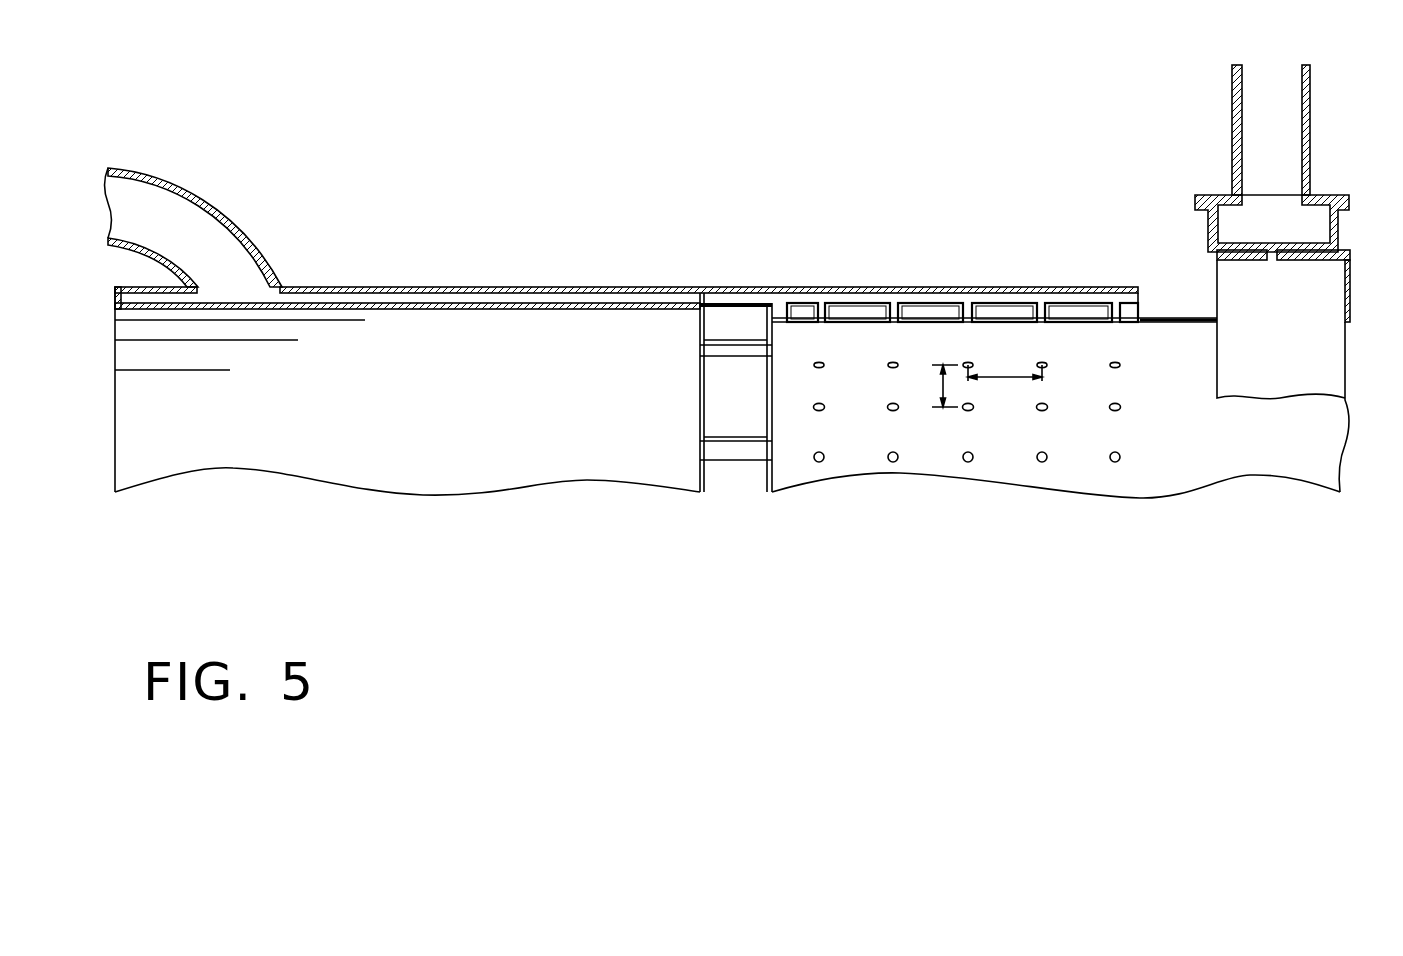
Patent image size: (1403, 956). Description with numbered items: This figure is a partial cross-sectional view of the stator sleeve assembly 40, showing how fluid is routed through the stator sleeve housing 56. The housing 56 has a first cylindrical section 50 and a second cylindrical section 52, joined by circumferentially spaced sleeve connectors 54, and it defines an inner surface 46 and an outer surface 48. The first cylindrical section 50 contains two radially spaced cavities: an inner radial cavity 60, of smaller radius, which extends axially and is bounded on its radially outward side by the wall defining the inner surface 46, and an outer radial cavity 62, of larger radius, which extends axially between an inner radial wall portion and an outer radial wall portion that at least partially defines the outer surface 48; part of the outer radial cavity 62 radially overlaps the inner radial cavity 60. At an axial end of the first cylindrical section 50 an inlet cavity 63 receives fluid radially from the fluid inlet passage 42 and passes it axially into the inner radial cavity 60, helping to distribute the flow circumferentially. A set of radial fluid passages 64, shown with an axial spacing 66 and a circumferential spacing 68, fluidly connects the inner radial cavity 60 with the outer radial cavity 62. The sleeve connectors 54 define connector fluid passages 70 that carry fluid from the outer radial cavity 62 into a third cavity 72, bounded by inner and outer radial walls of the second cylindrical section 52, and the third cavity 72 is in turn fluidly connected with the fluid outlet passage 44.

The stator sleeve assembly 40 is at (702, 69).
The fluid inlet passage 42 is at (1320, 132).
The fluid outlet passage 44 is at (207, 185).
The inner surface 46 is at (1290, 368).
The outer surface 48 is at (422, 282).
The first cylindrical section 50 is at (1042, 267).
The second cylindrical section 52 is at (380, 297).
The sleeve connectors 54 is at (758, 433).
The stator sleeve housing 56 is at (783, 230).
The inner radial cavity 60 is at (1152, 337).
The outer radial cavity 62 is at (872, 296).
The inlet cavity 63 is at (1263, 295).
The radial fluid passages 64 is at (898, 302).
The axial spacing 66 is at (1003, 377).
The circumferential spacing 68 is at (943, 385).
The connector fluid passages 70 is at (765, 298).
The third cavity 72 is at (512, 299).